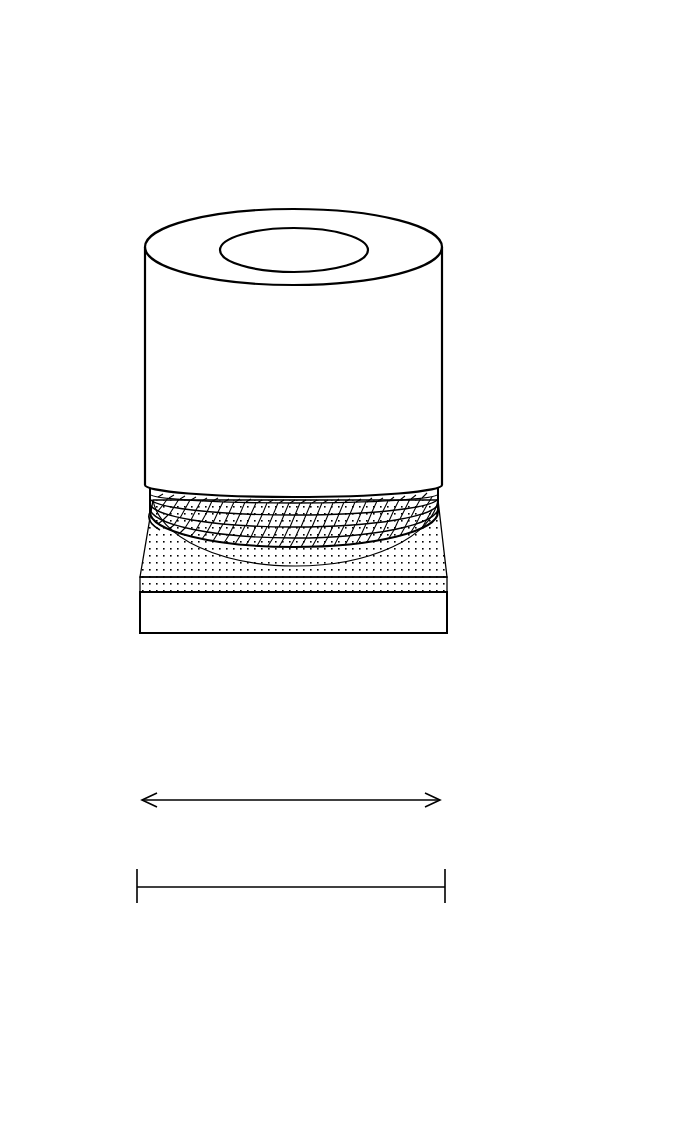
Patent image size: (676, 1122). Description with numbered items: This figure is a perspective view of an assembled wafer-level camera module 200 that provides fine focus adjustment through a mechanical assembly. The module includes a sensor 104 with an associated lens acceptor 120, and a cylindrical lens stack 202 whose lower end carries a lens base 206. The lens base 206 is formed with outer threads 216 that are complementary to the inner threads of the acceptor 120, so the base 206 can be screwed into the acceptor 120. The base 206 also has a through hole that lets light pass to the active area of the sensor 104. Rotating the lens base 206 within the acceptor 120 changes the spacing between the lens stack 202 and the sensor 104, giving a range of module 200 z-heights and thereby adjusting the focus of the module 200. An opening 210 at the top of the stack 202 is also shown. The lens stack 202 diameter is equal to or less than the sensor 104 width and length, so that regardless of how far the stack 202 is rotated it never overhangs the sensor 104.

The camera module 200 is at (104, 85).
The lens stack 202 is at (443, 300).
The aperture opening 210 is at (293, 207).
The lens base 206 is at (438, 508).
The outer threads 216 is at (152, 511).
The lens acceptor 120 is at (158, 548).
The sensor 104 is at (272, 626).